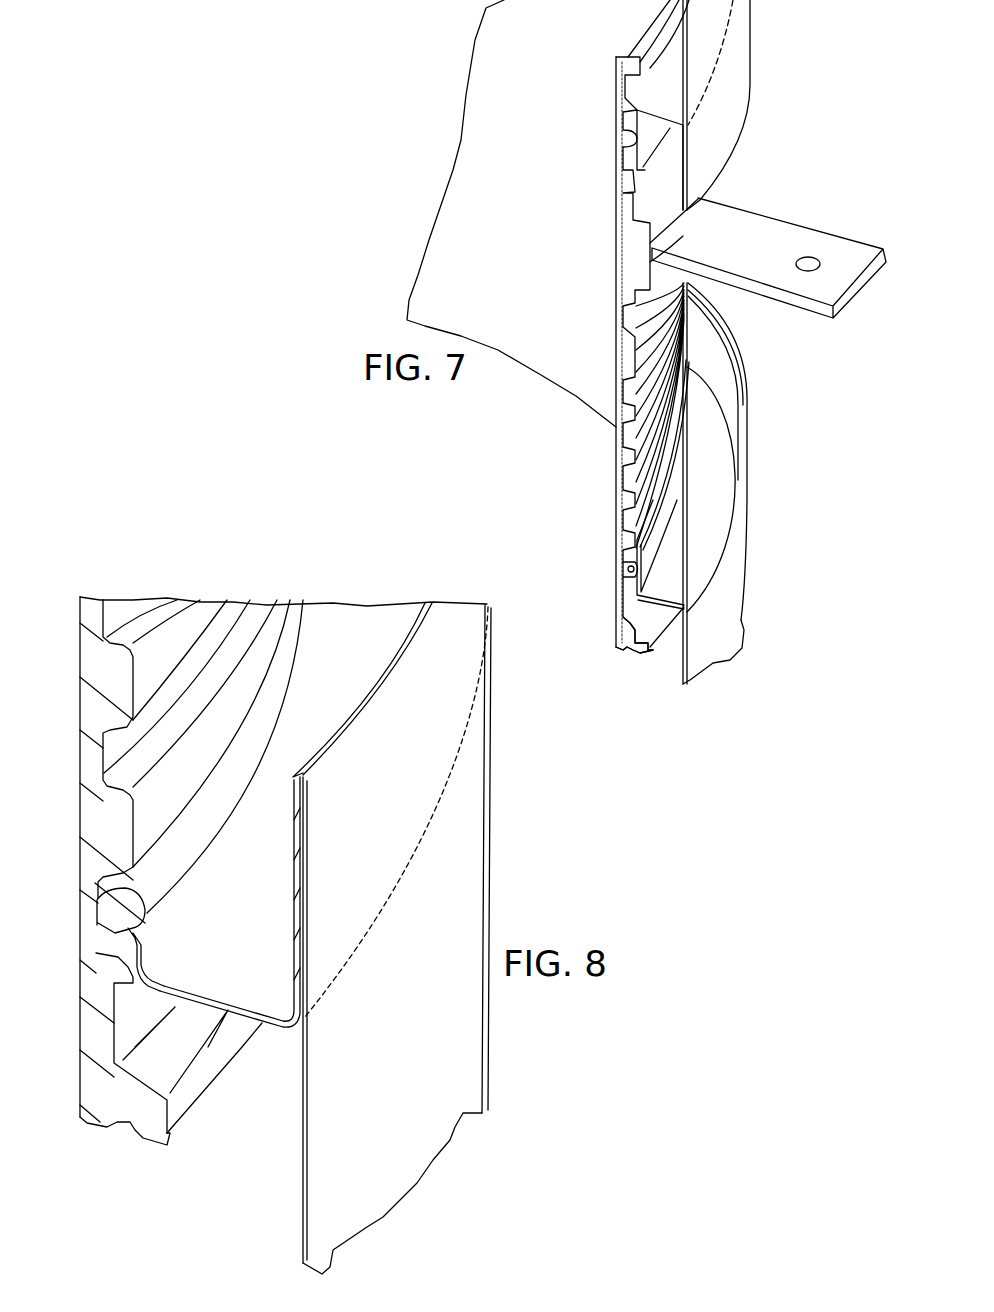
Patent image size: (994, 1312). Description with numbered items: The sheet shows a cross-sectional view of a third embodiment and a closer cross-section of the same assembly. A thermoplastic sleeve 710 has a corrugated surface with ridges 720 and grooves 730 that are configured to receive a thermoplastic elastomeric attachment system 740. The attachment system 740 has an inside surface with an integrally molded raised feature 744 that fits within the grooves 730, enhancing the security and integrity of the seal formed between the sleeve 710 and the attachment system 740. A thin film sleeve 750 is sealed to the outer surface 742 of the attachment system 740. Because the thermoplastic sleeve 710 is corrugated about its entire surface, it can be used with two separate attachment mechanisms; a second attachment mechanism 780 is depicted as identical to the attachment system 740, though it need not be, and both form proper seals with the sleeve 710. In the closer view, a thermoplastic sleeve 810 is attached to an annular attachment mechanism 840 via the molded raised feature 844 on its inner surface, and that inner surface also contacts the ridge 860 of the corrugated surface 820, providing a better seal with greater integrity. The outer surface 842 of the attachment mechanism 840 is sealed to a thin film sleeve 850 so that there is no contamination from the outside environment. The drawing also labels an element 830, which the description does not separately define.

In FIG. 7, the thermoplastic sleeve 710 is at (616, 500).
In FIG. 7, the ridges 720 is at (643, 647).
In FIG. 7, the grooves 730 is at (620, 610).
In FIG. 7, the thermoplastic elastomeric attachment system 740 is at (670, 580).
In FIG. 7, the outer surface 742 is at (717, 528).
In FIG. 7, the inside surface raised feature 744 is at (624, 563).
In FIG. 7, the thin film sleeve 750 is at (727, 647).
In FIG. 7, the attachment mechanism 780 is at (725, 112).
In FIG. 8, the thermoplastic sleeve 810 is at (80, 1085).
In FIG. 8, the corrugated surface 820 is at (173, 1138).
In FIG. 8, the support block 830 is at (114, 1017).
In FIG. 8, the attachment mechanism 840 is at (245, 967).
In FIG. 8, the outer surface 842 is at (353, 923).
In FIG. 8, the molded raised feature 844 is at (113, 903).
In FIG. 8, the thin film sleeve 850 is at (413, 1160).
In FIG. 8, the ridge 860 is at (136, 957).